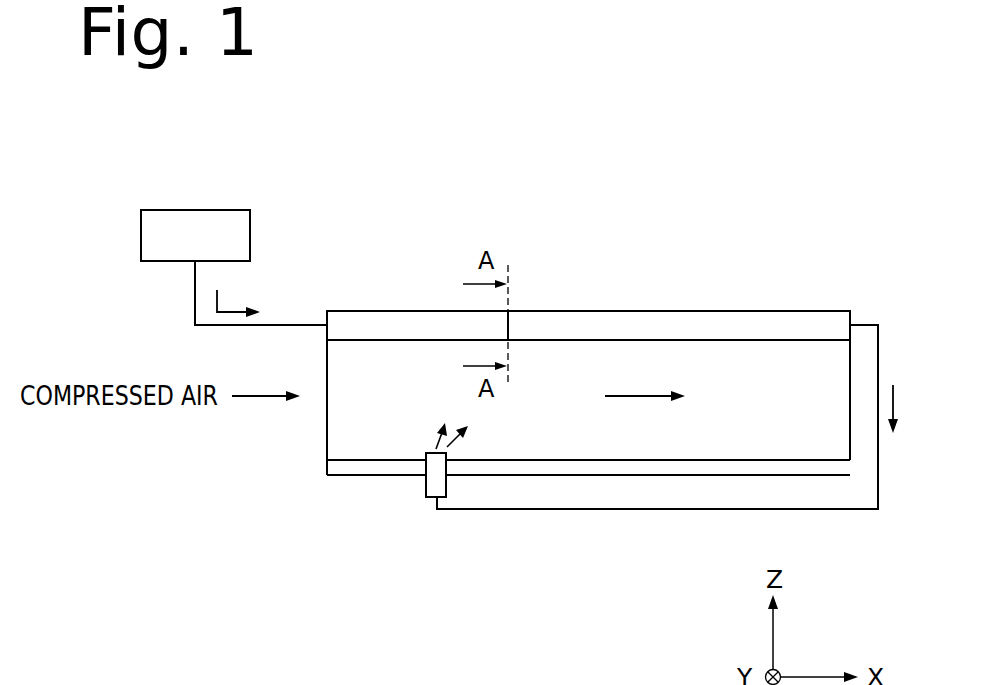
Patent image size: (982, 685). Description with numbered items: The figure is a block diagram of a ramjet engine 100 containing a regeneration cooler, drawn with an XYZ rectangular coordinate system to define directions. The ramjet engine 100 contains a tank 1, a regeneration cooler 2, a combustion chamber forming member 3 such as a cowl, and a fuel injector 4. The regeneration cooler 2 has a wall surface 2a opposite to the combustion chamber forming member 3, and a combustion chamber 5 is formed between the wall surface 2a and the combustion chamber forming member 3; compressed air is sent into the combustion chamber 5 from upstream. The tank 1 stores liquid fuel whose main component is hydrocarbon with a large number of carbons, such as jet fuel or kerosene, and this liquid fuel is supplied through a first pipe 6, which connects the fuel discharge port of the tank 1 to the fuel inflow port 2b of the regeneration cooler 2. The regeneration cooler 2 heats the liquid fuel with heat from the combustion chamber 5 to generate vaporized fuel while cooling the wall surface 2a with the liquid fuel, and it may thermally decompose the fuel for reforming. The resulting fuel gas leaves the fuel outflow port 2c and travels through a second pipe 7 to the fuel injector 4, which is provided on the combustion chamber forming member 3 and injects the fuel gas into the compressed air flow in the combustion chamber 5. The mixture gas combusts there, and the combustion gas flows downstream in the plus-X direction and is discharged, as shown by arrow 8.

The ramjet engine 100 is at (263, 172).
The tank 1 is at (250, 224).
The regeneration cooler 2 is at (668, 316).
The wall surface 2a is at (556, 342).
The fuel inflow port 2b is at (326, 312).
The fuel outflow port 2c is at (851, 311).
The combustion chamber forming member 3 is at (338, 470).
The fuel injector 4 is at (430, 496).
The combustion chamber 5 is at (780, 432).
The first pipe 6 is at (272, 325).
The second pipe 7 is at (630, 510).
The arrow 8 is at (645, 395).